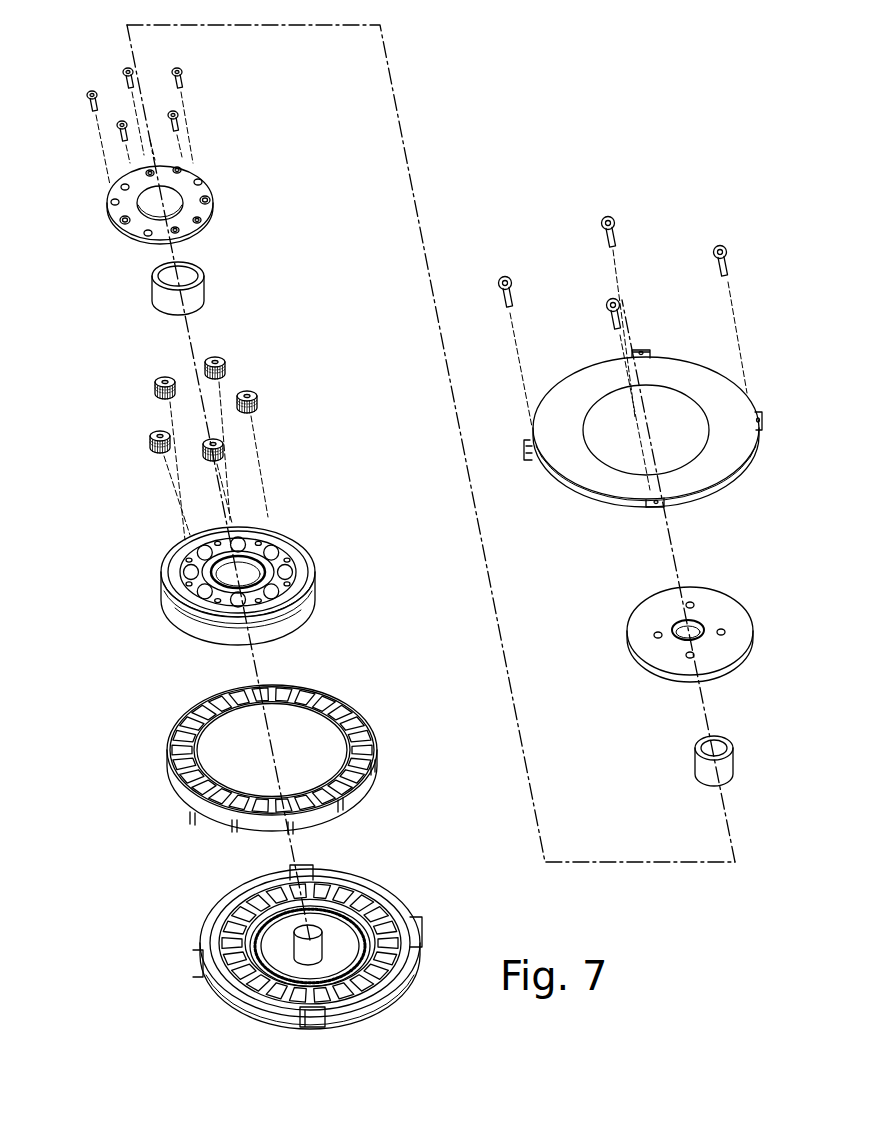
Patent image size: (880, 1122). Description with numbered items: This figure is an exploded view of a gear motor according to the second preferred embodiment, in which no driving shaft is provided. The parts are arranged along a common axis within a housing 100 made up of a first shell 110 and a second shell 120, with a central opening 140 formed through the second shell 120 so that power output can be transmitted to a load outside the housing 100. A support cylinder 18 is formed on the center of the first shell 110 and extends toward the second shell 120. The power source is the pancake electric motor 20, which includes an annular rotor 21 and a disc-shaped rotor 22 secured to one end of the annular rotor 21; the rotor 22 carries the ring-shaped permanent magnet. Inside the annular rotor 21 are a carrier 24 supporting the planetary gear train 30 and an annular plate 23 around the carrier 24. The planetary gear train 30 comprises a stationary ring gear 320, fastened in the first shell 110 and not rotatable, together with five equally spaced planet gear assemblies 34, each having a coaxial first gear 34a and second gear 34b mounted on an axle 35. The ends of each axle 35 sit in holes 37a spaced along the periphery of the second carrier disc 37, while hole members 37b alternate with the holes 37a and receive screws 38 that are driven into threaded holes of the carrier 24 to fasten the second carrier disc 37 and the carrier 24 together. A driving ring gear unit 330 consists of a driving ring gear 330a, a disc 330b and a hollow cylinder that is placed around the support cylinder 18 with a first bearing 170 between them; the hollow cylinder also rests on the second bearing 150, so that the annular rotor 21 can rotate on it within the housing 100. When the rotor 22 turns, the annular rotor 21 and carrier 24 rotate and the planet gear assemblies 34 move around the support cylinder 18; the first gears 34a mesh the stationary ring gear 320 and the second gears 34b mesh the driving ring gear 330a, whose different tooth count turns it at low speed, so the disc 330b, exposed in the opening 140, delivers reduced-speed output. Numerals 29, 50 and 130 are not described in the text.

The support cylinder 18 is at (275, 893).
The electric motor 20 is at (168, 688).
The annular rotor 21 is at (255, 586).
The rotor 22 is at (237, 630).
The annular plate 23 is at (305, 548).
The carrier 24 is at (172, 562).
The stator ring 29 is at (382, 732).
The planetary gear train 30 is at (272, 107).
The planet gear assembly 34 is at (311, 429).
The first gear 34a is at (305, 408).
The second gear 34b is at (252, 393).
The axle 35 is at (155, 383).
The second carrier disc 37 is at (160, 199).
The hole 37a is at (120, 222).
The hole member 37b is at (205, 198).
The screw 38 is at (90, 97).
The screw 50 is at (603, 248).
The housing 100 is at (638, 430).
The first shell 110 is at (272, 1012).
The second shell 120 is at (722, 388).
The base ring 130 is at (300, 955).
The central opening 140 is at (608, 450).
The second bearing 150 is at (205, 280).
The first bearing 170 is at (733, 768).
The stationary ring gear 320 is at (335, 935).
The driving ring gear unit 330 is at (686, 642).
The driving ring gear 330a is at (673, 685).
The disc 330b is at (665, 610).